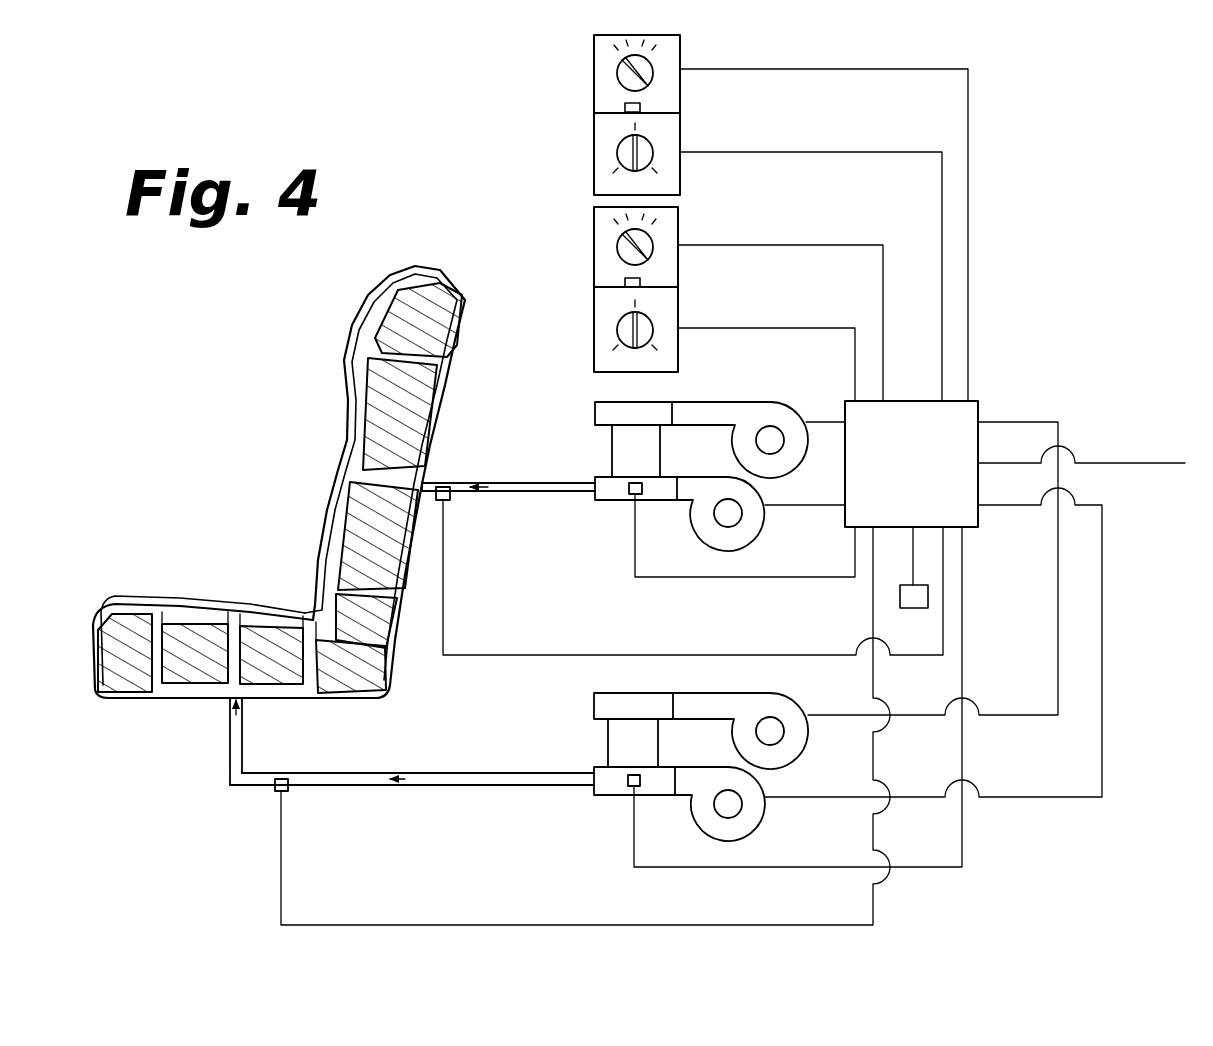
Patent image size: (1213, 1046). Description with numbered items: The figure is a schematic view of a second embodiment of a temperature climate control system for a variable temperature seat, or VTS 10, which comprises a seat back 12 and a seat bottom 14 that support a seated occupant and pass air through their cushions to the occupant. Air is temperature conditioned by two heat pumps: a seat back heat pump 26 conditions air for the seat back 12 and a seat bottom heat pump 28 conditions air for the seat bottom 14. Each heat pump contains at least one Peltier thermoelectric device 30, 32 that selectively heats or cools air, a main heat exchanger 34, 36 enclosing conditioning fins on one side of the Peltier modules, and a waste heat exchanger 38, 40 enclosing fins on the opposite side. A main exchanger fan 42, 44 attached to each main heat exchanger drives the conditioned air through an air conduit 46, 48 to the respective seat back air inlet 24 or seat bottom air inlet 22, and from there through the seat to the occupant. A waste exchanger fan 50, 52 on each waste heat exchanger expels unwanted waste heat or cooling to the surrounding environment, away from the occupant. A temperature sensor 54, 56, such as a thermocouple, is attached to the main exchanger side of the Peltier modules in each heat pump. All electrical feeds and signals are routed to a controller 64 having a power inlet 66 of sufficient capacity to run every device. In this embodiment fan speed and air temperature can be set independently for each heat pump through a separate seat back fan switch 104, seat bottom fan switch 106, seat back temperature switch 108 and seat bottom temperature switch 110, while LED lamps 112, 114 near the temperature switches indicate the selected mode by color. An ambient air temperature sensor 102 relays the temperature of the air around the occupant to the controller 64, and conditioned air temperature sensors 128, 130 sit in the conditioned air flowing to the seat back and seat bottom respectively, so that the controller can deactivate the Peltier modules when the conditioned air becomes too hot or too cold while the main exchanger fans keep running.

The VTS 10 is at (279, 482).
The seat back 12 is at (340, 345).
The seat bottom 14 is at (210, 606).
The seat bottom air inlet 22 is at (243, 705).
The seat back air inlet 24 is at (430, 483).
The seat back heat pump 26 is at (680, 474).
The seat bottom heat pump 28 is at (801, 654).
The thermoelectric device 30 is at (612, 446).
The thermoelectric device 32 is at (612, 739).
The main heat exchanger 34 is at (600, 500).
The main heat exchanger 36 is at (600, 795).
The waste heat exchanger 38 is at (675, 408).
The waste heat exchanger 40 is at (628, 708).
The main exchanger fan 42 is at (752, 535).
The main exchanger fan 44 is at (750, 825).
The air conduit 46 is at (497, 493).
The air conduit 48 is at (350, 786).
The waste exchanger fan 50 is at (762, 408).
The waste exchanger fan 52 is at (752, 705).
The temperature sensor 54 is at (632, 496).
The temperature sensor 56 is at (633, 790).
The controller 64 is at (975, 410).
The power inlet 66 is at (1117, 463).
The ambient air temperature sensor 102 is at (910, 610).
The seat back fan switch 104 is at (681, 47).
The seat bottom fan switch 106 is at (679, 221).
The seat back temperature switch 108 is at (681, 127).
The seat bottom temperature switch 110 is at (679, 299).
The LED lamp 112 is at (625, 108).
The LED lamp 114 is at (625, 284).
The conditioned air temperature sensor 128 is at (443, 502).
The conditioned air temperature sensor 130 is at (276, 790).